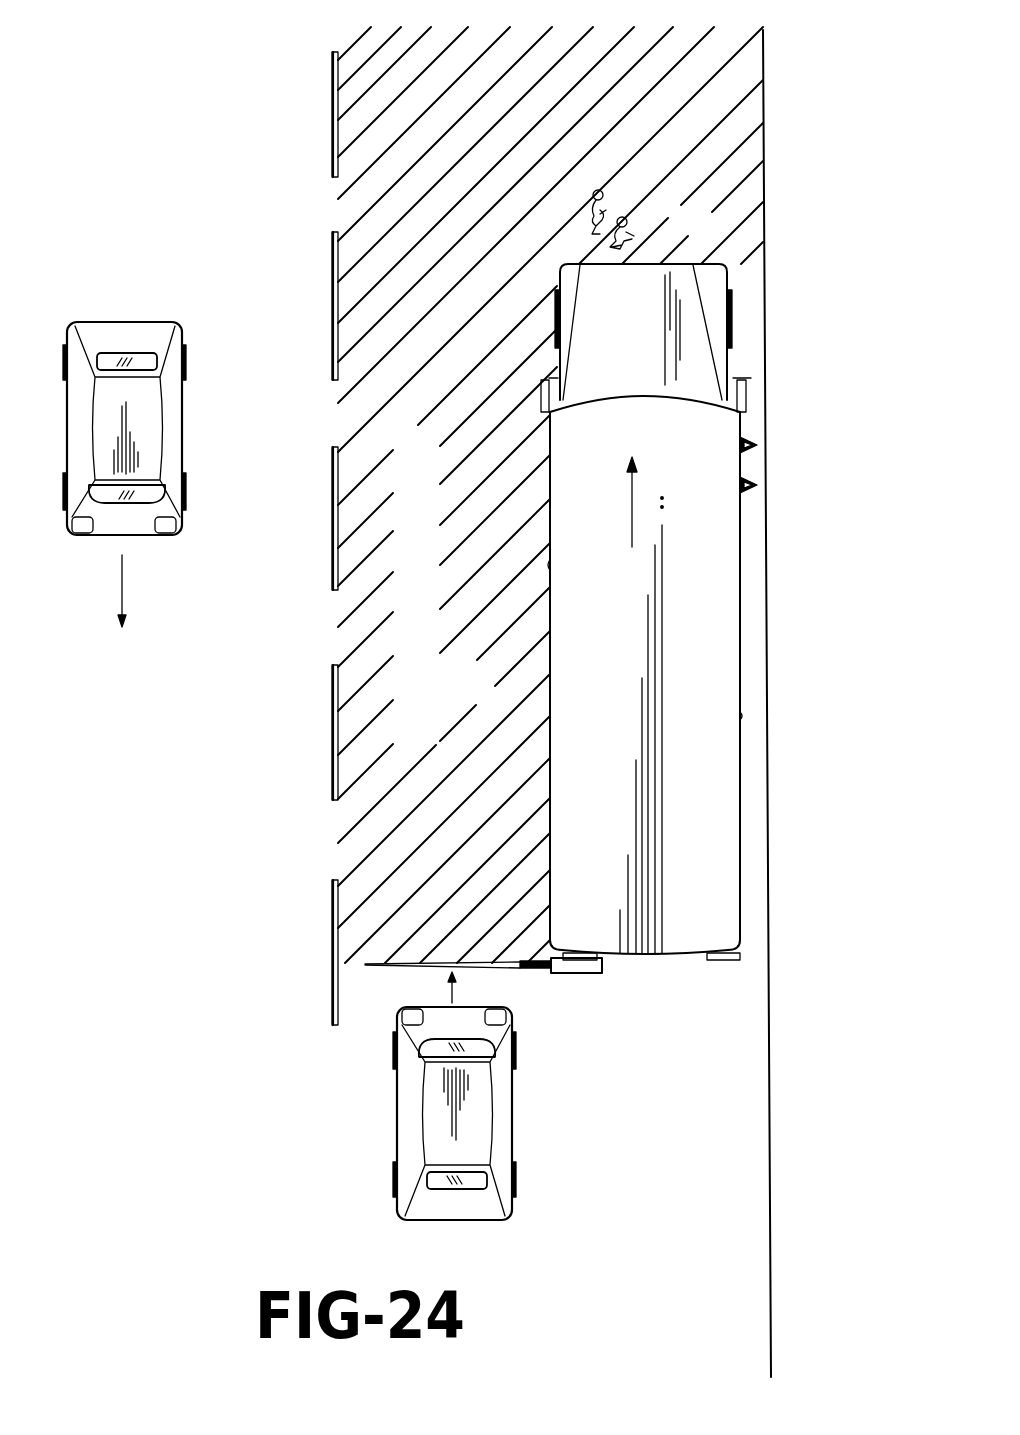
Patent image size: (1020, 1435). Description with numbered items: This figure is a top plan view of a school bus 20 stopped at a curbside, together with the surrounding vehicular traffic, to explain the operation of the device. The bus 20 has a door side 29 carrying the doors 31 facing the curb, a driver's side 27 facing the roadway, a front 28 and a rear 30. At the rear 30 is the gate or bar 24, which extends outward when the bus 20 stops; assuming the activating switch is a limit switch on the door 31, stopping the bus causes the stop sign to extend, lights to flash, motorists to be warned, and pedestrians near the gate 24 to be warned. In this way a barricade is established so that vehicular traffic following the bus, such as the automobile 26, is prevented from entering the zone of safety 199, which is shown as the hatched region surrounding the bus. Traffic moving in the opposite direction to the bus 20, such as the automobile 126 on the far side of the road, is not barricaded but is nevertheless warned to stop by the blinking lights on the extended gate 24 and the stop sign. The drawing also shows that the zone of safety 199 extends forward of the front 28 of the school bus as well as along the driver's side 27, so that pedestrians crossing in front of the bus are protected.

The school bus 20 is at (697, 463).
The gate or bar 24 is at (520, 966).
The motor vehicle 26 is at (511, 1118).
The driver's side 27 is at (553, 562).
The front 28 is at (650, 256).
The door side 29 is at (752, 716).
The rear 30 is at (654, 955).
The doors 31 is at (750, 487).
The automobile 126 is at (146, 328).
The zone of safety 199 is at (477, 697).